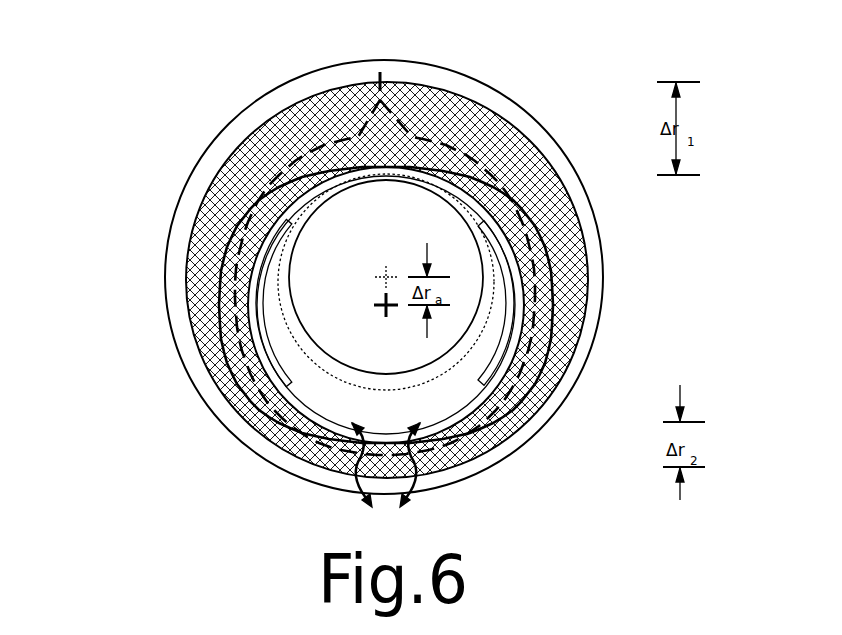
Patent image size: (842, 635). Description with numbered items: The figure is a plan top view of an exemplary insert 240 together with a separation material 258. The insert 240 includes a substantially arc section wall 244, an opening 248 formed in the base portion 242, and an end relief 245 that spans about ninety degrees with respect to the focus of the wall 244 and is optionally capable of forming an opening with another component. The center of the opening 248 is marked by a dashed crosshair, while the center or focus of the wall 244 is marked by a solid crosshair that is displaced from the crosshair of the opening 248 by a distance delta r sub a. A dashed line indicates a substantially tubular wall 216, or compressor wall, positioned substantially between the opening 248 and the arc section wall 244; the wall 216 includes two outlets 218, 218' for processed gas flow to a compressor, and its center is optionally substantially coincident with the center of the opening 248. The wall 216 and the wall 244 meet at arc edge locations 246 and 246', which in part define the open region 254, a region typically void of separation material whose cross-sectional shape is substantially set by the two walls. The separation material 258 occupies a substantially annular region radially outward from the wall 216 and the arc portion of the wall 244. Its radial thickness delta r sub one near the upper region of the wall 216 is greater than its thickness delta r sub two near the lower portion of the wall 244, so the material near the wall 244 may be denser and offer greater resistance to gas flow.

The insert 240 is at (505, 70).
The base portion 242 is at (523, 123).
The separation material 258 is at (451, 144).
The substantially tubular wall 216 is at (320, 190).
The location 246 is at (316, 302).
The location 246' is at (448, 299).
The opening 248 is at (292, 300).
The outlet 218 is at (386, 277).
The outlet 218' is at (386, 282).
The substantially arc section wall 244 is at (305, 394).
The open region 254 is at (414, 417).
The end relief 245 is at (420, 418).